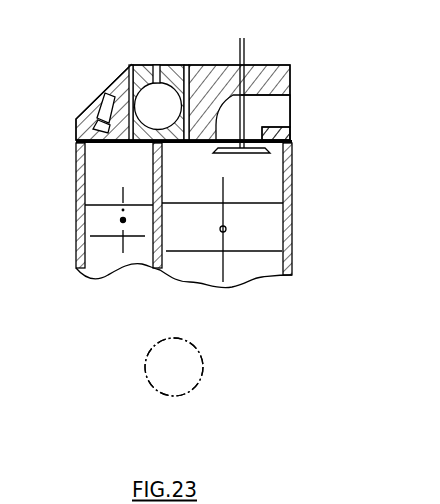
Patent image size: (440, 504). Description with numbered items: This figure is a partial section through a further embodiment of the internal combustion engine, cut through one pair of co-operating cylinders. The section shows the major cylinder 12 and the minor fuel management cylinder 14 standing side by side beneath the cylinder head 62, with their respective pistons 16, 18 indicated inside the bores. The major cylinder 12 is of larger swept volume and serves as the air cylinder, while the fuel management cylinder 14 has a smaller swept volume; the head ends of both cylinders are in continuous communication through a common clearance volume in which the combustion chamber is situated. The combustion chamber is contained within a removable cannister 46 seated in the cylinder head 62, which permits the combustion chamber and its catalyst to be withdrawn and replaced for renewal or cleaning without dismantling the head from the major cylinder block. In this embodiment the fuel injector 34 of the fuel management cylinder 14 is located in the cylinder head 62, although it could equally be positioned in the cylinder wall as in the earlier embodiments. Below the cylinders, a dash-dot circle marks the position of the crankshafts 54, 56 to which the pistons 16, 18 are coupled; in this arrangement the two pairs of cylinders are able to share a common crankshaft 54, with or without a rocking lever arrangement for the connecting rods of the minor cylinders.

The major cylinder 12 is at (255, 183).
The fuel management cylinder 14 is at (97, 177).
The piston 16 is at (253, 232).
The piston 18 is at (100, 218).
The fuel injector 34 is at (103, 110).
The removable cannister 46 is at (139, 66).
The crankshaft 54 is at (123, 220).
The crankshaft 56 is at (185, 342).
The cylinder head 62 is at (207, 78).